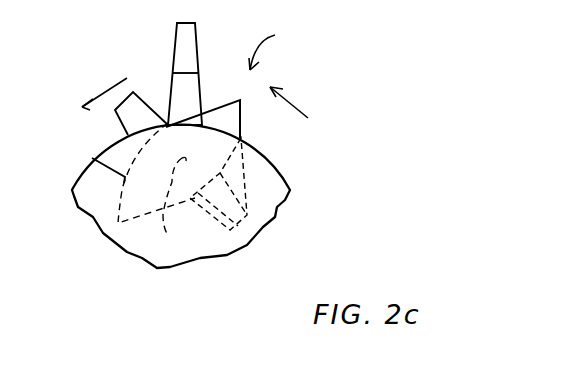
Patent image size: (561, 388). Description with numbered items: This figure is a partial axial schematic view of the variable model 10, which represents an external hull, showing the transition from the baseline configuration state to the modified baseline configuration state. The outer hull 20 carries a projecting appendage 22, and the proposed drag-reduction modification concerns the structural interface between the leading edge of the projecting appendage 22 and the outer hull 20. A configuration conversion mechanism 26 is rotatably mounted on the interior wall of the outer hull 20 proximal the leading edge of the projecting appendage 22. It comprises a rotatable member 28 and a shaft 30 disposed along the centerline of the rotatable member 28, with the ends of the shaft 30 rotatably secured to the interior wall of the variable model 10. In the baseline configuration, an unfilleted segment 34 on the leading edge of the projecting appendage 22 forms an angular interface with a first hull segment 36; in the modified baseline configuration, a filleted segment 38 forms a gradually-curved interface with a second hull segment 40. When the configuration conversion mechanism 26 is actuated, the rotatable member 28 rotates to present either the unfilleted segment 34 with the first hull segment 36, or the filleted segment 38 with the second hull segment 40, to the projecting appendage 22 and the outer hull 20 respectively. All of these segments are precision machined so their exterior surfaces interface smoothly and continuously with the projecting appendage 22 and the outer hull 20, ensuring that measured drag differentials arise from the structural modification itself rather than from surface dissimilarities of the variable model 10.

The variable model 10 is at (337, 120).
The outer hull 20 is at (288, 178).
The projecting appendage 22 is at (182, 42).
The configuration conversion mechanism 26 is at (272, 50).
The rotatable member 28 is at (92, 158).
The shaft 30 is at (176, 202).
The unfilleted segment 34 is at (130, 117).
The first hull segment 36 is at (218, 102).
The filleted segment 38 is at (272, 222).
The second hull segment 40 is at (240, 125).